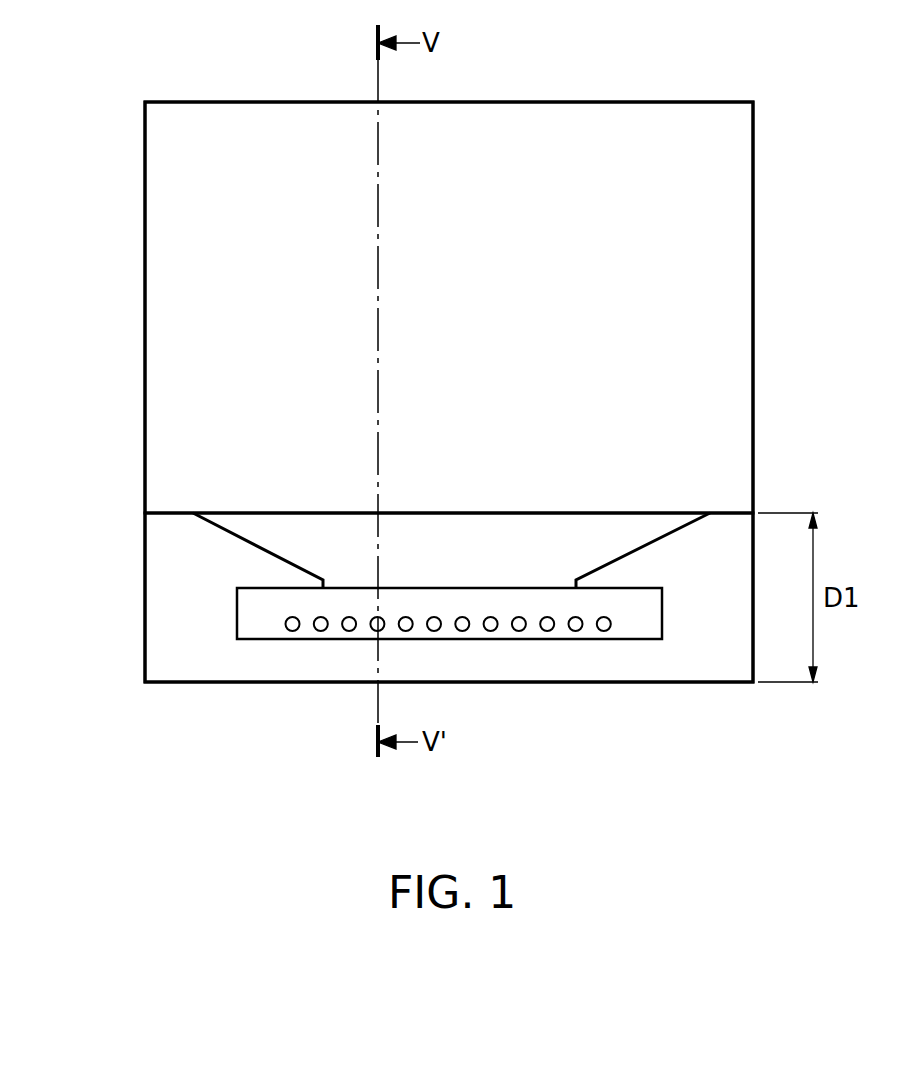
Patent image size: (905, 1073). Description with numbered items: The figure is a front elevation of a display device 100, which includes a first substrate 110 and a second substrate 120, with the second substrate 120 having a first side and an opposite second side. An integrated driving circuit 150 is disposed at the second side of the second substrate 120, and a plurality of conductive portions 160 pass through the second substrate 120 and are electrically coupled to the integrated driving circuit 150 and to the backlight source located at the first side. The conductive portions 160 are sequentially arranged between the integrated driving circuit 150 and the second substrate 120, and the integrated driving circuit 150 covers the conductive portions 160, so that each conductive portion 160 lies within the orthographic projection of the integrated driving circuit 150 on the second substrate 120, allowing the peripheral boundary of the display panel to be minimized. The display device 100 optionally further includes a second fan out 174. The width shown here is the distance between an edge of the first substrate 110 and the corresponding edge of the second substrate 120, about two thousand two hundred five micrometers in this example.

The display device 100 is at (95, 42).
The first substrate 110 is at (178, 263).
The second substrate 120 is at (178, 609).
The integrated driving circuit 150 is at (633, 615).
The conductive portion 160 is at (373, 630).
The second fan out 174 is at (275, 537).